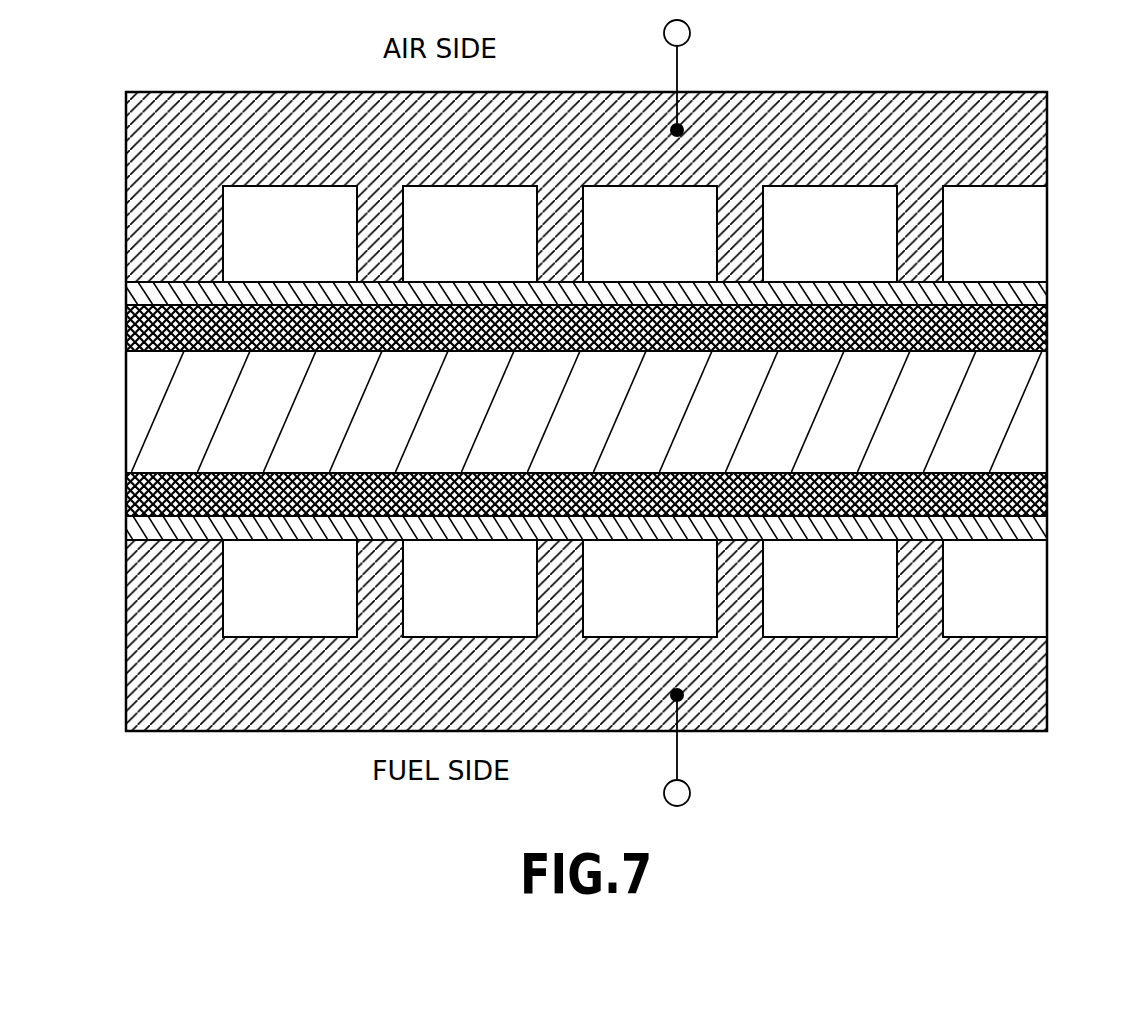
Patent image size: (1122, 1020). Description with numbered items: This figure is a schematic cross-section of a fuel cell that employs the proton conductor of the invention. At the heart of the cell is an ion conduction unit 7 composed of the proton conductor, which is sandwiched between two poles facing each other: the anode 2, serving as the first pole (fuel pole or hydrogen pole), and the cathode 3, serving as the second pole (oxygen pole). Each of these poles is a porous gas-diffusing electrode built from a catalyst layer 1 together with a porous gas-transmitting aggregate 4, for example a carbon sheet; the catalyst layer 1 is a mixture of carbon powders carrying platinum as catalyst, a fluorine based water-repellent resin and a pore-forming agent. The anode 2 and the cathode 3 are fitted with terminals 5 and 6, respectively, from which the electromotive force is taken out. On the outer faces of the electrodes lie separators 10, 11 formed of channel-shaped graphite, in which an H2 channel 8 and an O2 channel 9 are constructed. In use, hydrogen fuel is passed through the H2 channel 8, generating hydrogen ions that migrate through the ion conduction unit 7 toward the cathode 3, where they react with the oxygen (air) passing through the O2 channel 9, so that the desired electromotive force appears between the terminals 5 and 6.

The catalyst layer 1 is at (128, 329).
The anode 2 is at (578, 513).
The cathode 3 is at (578, 317).
The porous gas-transmitting aggregate 4 is at (128, 531).
The terminal 5 is at (690, 792).
The terminal 6 is at (690, 31).
The ion conduction unit 7 is at (163, 412).
The H2 channel 8 is at (238, 601).
The O2 channel 9 is at (243, 228).
The separator 10 is at (1028, 136).
The separator 11 is at (1025, 682).